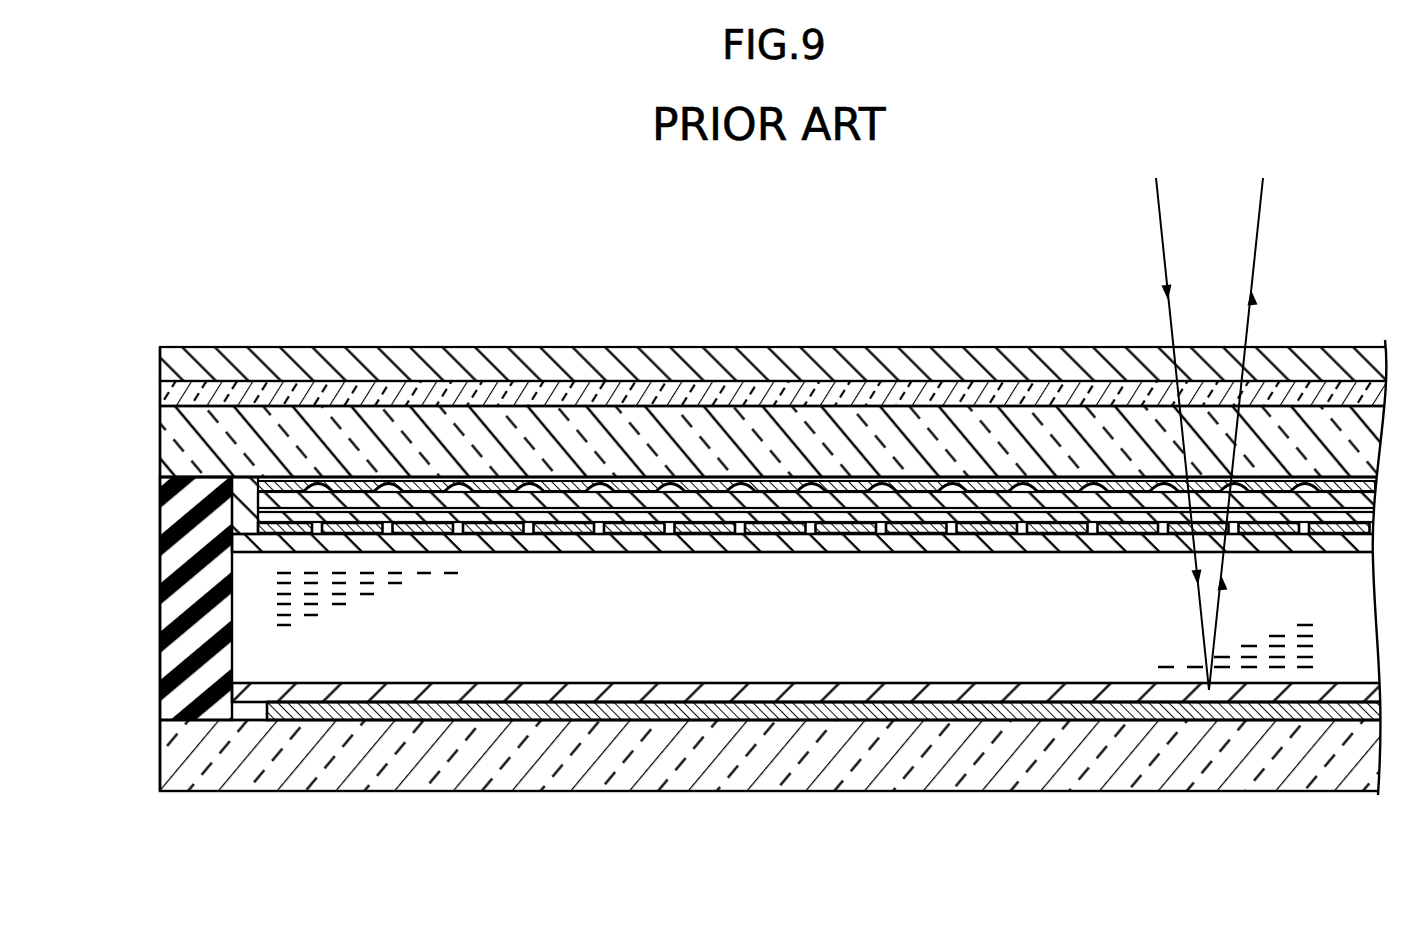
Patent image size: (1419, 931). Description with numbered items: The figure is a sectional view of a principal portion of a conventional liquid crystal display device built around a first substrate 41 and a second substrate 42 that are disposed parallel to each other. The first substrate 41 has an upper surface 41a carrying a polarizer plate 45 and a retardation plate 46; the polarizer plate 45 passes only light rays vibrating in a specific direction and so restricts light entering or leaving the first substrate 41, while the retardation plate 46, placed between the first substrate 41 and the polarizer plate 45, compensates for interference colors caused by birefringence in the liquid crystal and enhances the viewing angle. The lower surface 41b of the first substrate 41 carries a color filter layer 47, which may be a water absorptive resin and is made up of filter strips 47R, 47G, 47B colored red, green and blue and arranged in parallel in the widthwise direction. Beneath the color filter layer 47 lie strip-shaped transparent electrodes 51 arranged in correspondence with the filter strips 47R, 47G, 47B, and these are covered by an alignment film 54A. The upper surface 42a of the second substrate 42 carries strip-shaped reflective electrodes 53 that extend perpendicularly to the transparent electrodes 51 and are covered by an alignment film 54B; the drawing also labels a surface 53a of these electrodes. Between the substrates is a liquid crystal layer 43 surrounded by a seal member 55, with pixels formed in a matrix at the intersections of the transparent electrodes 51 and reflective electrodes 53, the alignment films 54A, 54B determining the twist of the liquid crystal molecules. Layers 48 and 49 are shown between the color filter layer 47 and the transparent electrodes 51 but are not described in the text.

The first substrate 41 is at (775, 340).
The upper surface 41a is at (688, 450).
The lower surface 41b is at (761, 478).
The second substrate 42 is at (775, 790).
The upper surface 42a is at (785, 710).
The liquid crystal layer 43 is at (775, 755).
The polarizer plate 45 is at (205, 347).
The retardation plate 46 is at (252, 385).
The color filter layer 47 is at (824, 373).
The filter strip 47R is at (305, 481).
The filter strip 47G is at (368, 481).
The filter strip 47B is at (437, 481).
The overcoat layer 48 is at (849, 500).
The counter electrode 49 is at (873, 513).
The transparent electrodes 51 is at (560, 552).
The reflective electrodes 53 is at (828, 790).
The surface of reflective layer 53a is at (597, 700).
The alignment film 54A is at (808, 553).
The alignment film 54B is at (855, 690).
The seal member 55 is at (158, 580).